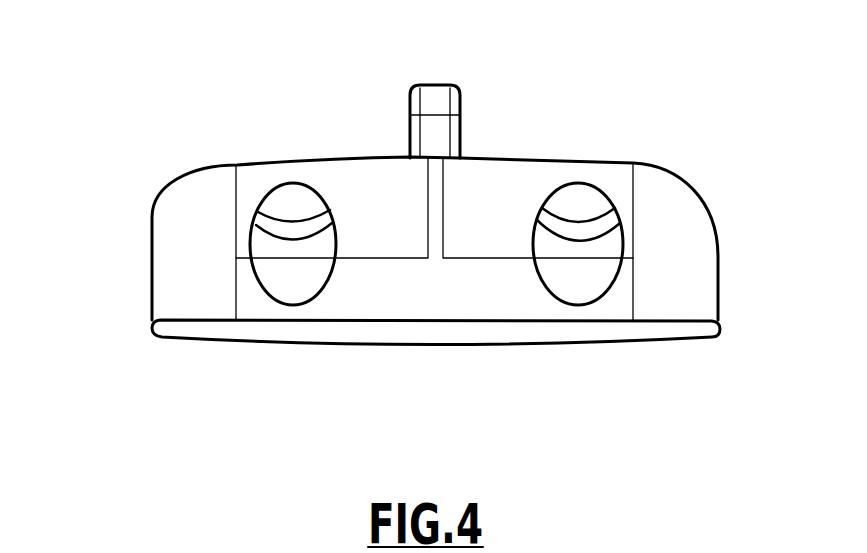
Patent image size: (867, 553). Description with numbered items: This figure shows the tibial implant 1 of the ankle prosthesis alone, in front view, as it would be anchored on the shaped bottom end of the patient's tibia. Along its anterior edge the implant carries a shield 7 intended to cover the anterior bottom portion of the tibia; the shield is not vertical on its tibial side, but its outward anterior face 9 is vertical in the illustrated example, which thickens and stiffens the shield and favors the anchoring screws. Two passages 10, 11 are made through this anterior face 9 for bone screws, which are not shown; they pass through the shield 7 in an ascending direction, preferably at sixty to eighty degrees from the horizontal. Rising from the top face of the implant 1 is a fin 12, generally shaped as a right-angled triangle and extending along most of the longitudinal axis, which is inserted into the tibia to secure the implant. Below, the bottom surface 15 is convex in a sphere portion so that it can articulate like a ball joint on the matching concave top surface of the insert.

The tibial implant 1 is at (122, 252).
The shield 7 is at (360, 298).
The anterior face 9 is at (470, 222).
The passage 10 is at (578, 265).
The passage 11 is at (282, 273).
The fin 12 is at (438, 133).
The bottom surface 15 is at (430, 347).